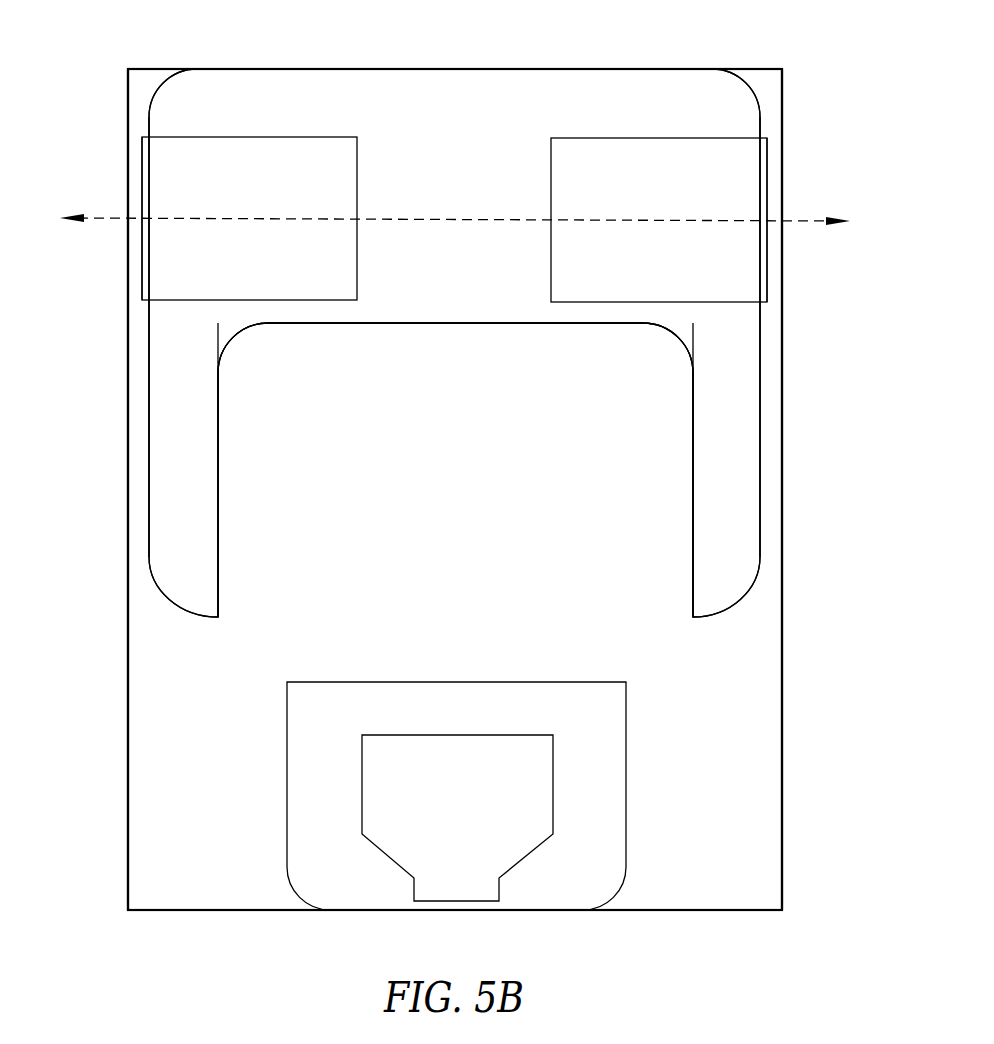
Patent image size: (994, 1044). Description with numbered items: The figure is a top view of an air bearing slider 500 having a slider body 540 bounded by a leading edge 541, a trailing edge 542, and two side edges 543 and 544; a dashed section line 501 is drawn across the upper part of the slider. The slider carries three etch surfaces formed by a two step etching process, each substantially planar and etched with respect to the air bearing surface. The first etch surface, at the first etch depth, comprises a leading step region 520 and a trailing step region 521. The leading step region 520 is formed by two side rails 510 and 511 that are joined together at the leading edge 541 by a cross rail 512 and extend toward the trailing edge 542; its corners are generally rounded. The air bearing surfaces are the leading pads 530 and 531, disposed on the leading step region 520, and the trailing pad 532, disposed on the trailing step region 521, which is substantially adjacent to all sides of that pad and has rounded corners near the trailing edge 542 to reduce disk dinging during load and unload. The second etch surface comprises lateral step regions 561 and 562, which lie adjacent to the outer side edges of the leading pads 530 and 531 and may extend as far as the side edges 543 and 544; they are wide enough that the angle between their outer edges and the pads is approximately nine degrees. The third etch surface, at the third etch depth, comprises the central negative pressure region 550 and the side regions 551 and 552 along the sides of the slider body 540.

The air bearing slider 500 is at (505, 469).
The section line 501 is at (435, 200).
The side rail 510 is at (726, 470).
The side rail 511 is at (183, 470).
The cross rail 512 is at (454, 196).
The leading step region 520 is at (529, 470).
The trailing step region 521 is at (456, 796).
The leading pad 530 is at (249, 218).
The leading pad 531 is at (659, 220).
The trailing pad 532 is at (457, 818).
The slider body 540 is at (498, 343).
The leading edge 541 is at (455, 42).
The trailing edge 542 is at (455, 940).
The side edge 543 is at (816, 489).
The side edge 544 is at (94, 489).
The negative pressure region 550 is at (455, 470).
The side region 551 is at (801, 337).
The side region 552 is at (111, 337).
The lateral step region 561 is at (805, 220).
The lateral step region 562 is at (97, 210).